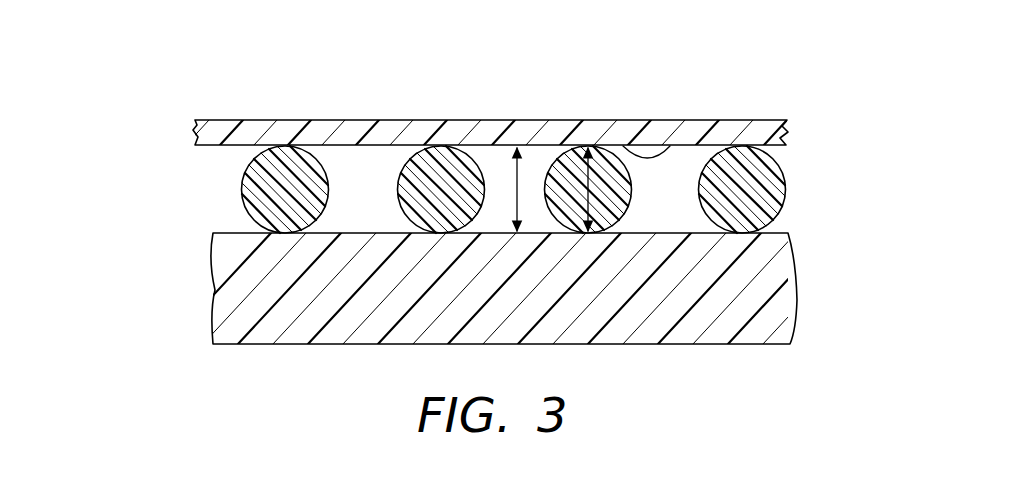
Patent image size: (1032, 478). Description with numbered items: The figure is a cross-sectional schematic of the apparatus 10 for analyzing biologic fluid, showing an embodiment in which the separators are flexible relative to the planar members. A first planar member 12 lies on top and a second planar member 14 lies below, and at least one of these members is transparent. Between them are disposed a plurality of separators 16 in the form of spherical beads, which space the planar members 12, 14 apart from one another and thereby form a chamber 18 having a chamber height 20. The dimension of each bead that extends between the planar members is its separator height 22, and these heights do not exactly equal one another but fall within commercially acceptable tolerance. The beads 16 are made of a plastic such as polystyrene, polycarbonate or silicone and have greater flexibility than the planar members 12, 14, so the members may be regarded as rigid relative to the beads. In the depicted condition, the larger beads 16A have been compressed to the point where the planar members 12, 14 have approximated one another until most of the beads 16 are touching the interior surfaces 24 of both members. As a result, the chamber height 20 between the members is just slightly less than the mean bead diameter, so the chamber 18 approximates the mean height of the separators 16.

The apparatus for analyzing biologic fluid 10 is at (184, 114).
The first planar member 12 is at (745, 120).
The second planar member 14 is at (735, 345).
The separators 16 is at (509, 196).
The larger beads 16A is at (242, 183).
The chamber 18 is at (378, 167).
The chamber height 20 is at (510, 145).
The height of the separator 22 is at (566, 145).
The interior surfaces 24 is at (625, 146).